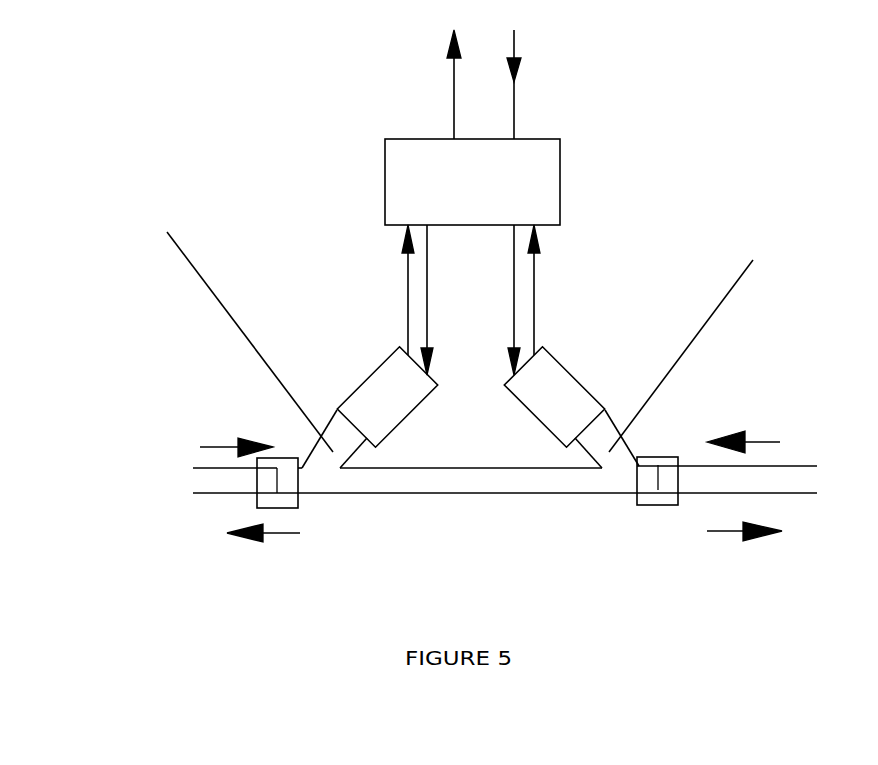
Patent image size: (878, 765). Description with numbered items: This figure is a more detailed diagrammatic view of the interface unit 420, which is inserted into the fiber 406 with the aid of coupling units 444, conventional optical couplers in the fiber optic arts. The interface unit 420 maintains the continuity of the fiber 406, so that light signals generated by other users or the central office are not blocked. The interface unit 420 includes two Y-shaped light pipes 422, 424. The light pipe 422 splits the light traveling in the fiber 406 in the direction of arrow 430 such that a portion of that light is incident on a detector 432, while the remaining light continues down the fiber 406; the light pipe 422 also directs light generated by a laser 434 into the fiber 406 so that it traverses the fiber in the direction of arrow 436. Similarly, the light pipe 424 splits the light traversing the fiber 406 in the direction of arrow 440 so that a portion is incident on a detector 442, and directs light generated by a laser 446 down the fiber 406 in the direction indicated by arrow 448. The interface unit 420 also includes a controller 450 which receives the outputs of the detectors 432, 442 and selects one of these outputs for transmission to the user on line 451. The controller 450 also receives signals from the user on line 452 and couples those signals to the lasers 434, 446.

The fiber 406 is at (797, 477).
The interface unit 420 is at (686, 133).
The light pipe 422 is at (218, 318).
The light pipe 424 is at (731, 332).
The arrow 430 is at (250, 440).
The detector 432 is at (373, 393).
The laser 434 is at (407, 408).
The arrow 436 is at (247, 540).
The arrow 440 is at (728, 433).
The detector 442 is at (571, 391).
The coupling unit 444 is at (667, 498).
The laser 446 is at (534, 398).
The arrow 448 is at (760, 540).
The controller 450 is at (490, 210).
The line 451 is at (453, 118).
The line 452 is at (514, 117).